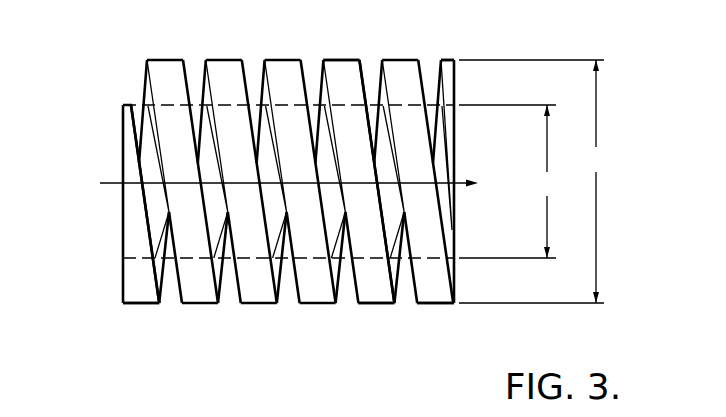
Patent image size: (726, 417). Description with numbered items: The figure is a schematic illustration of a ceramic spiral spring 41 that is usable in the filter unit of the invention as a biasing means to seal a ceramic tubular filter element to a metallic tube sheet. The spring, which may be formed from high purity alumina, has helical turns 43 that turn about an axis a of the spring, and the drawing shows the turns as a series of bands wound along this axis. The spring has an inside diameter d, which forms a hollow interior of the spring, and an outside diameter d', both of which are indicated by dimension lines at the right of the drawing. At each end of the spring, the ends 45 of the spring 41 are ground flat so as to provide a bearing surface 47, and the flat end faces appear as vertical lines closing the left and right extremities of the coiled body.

The ceramic spiral spring 41 is at (118, 72).
The helical turns 43 is at (362, 72).
The ends 45 is at (123, 130).
The bearing surface 47 is at (123, 225).
The axis a is at (270, 183).
The inside diameter d is at (547, 181).
The outside diameter d' is at (599, 181).